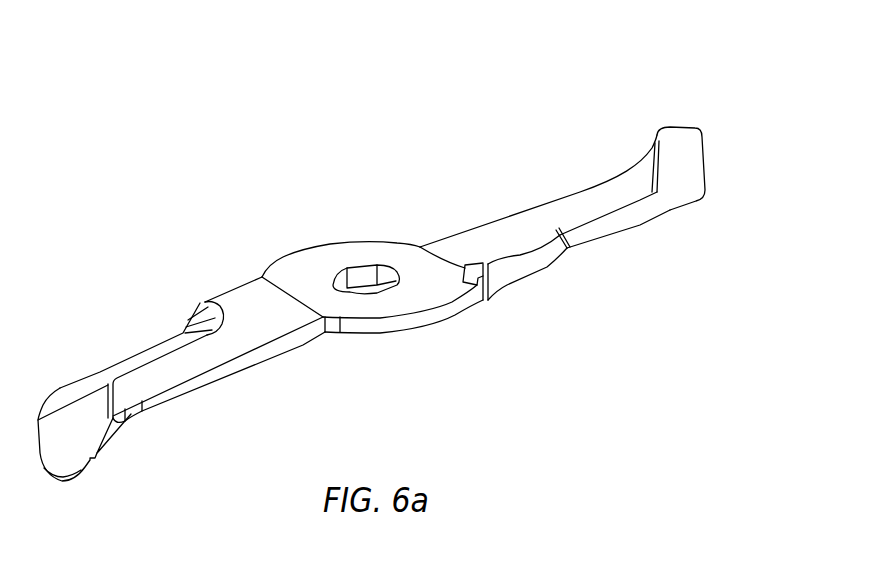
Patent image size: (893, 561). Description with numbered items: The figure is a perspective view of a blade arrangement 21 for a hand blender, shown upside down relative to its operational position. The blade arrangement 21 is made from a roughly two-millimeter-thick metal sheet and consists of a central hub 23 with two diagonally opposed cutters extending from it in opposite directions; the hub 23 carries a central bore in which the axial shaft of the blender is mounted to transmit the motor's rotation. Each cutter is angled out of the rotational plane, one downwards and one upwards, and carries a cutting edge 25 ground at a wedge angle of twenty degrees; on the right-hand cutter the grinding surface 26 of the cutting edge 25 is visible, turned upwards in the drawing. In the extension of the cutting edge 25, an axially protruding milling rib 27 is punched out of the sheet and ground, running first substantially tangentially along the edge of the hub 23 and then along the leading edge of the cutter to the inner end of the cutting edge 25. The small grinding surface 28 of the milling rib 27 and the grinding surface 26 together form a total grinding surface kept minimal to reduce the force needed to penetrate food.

The blade arrangement 21 is at (165, 228).
The hub 23 is at (323, 263).
The cutting edge 25 is at (663, 214).
The grinding surface 26 is at (682, 175).
The milling rib 27 is at (512, 272).
The grinding surface of the milling rib 28 is at (503, 253).